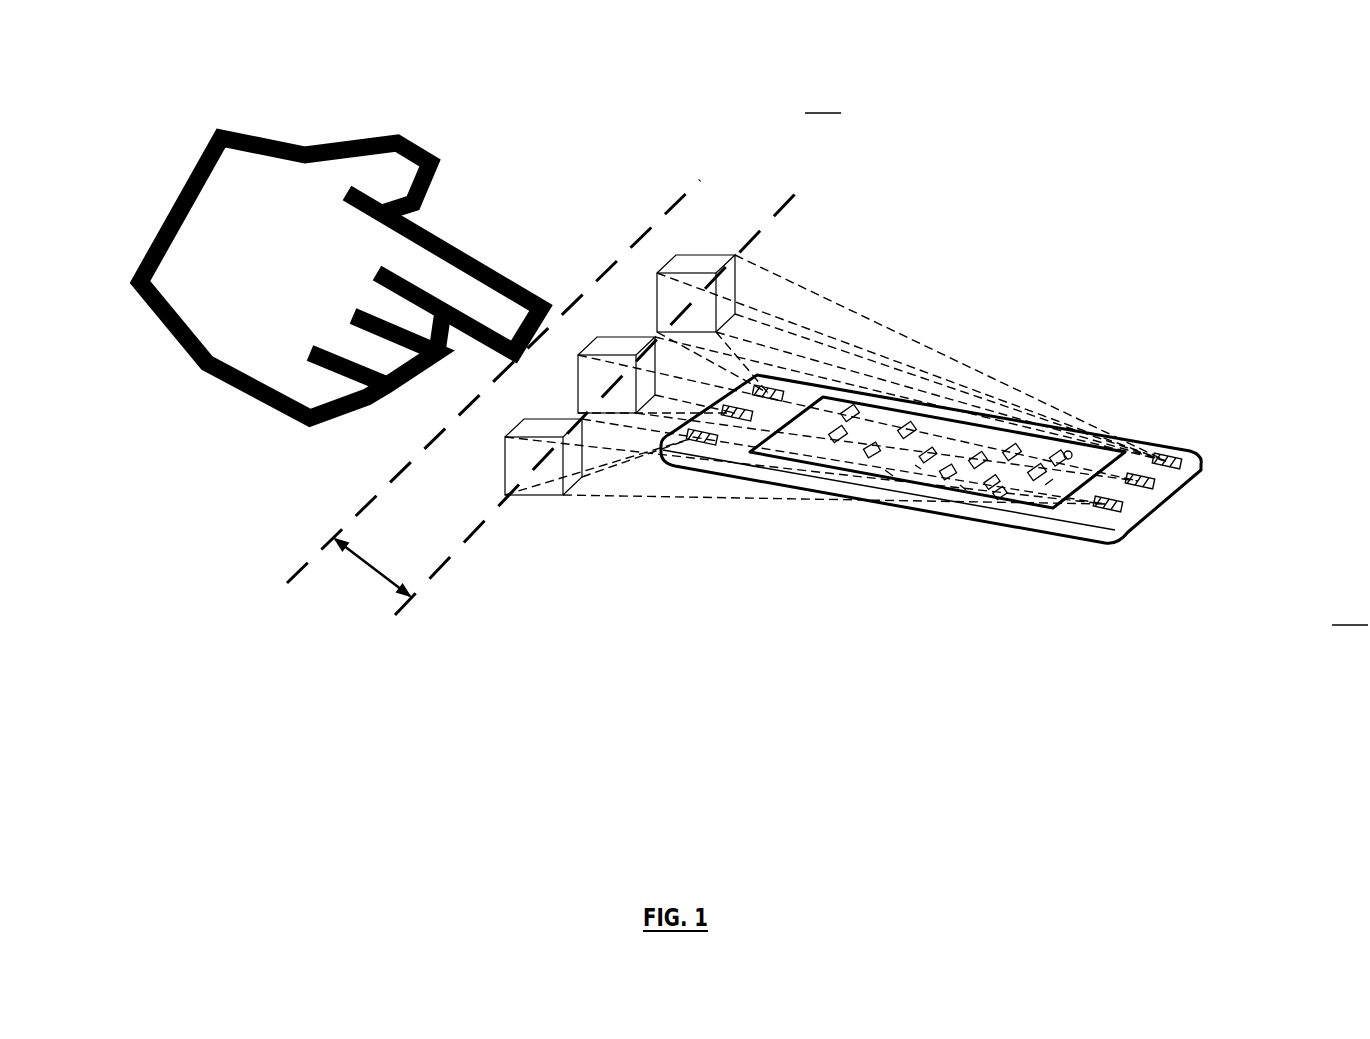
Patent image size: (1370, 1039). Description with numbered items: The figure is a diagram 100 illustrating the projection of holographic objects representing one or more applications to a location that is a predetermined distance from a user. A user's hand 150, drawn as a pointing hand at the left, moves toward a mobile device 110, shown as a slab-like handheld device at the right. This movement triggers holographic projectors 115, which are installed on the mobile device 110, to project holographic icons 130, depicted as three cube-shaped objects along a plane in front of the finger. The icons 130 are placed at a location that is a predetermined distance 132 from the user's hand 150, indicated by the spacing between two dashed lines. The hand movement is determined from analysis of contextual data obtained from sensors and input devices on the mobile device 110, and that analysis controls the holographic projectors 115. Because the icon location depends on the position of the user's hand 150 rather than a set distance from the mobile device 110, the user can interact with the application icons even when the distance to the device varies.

The diagram 100 is at (1100, 75).
The mobile device 110 is at (1020, 523).
The holographic projectors 115 is at (1186, 464).
The holographic icons 130 is at (575, 147).
The predetermined distance 132 is at (365, 577).
The user's hand 150 is at (262, 405).